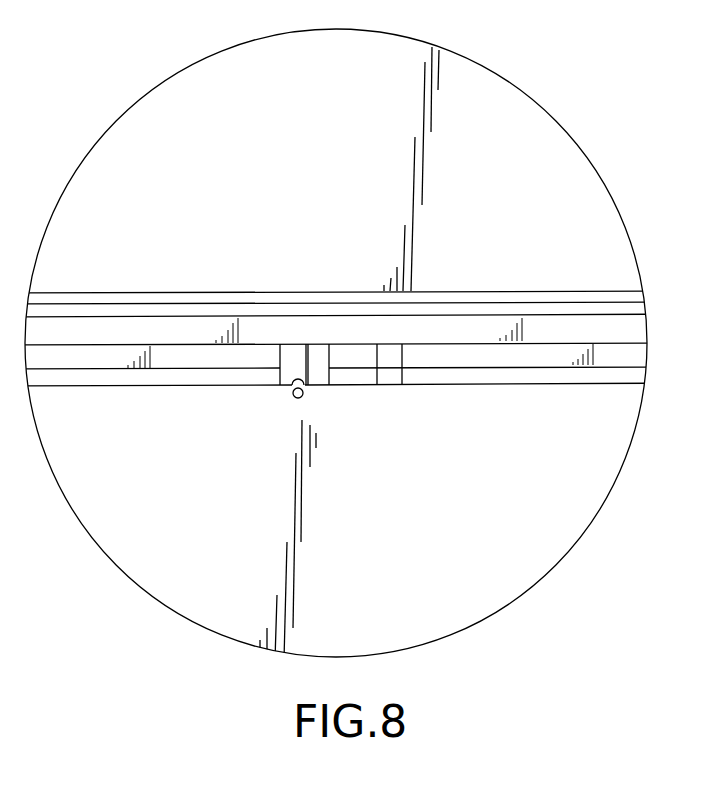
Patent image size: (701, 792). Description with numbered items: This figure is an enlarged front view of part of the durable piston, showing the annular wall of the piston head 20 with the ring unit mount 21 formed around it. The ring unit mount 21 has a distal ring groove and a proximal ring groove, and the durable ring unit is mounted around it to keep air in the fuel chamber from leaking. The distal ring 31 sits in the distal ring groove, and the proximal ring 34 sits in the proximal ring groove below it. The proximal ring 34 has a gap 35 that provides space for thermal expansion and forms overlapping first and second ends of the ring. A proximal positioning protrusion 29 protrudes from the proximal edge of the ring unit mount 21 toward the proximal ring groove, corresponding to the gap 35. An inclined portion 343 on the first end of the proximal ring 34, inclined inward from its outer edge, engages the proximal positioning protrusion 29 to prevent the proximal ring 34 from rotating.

The piston head 20 is at (527, 523).
The ring unit mount 21 is at (160, 298).
The distal ring 31 is at (547, 333).
The proximal ring 34 is at (520, 358).
The inclined portion 343 is at (290, 355).
The gap 35 is at (318, 383).
The proximal positioning protrusion 29 is at (292, 384).